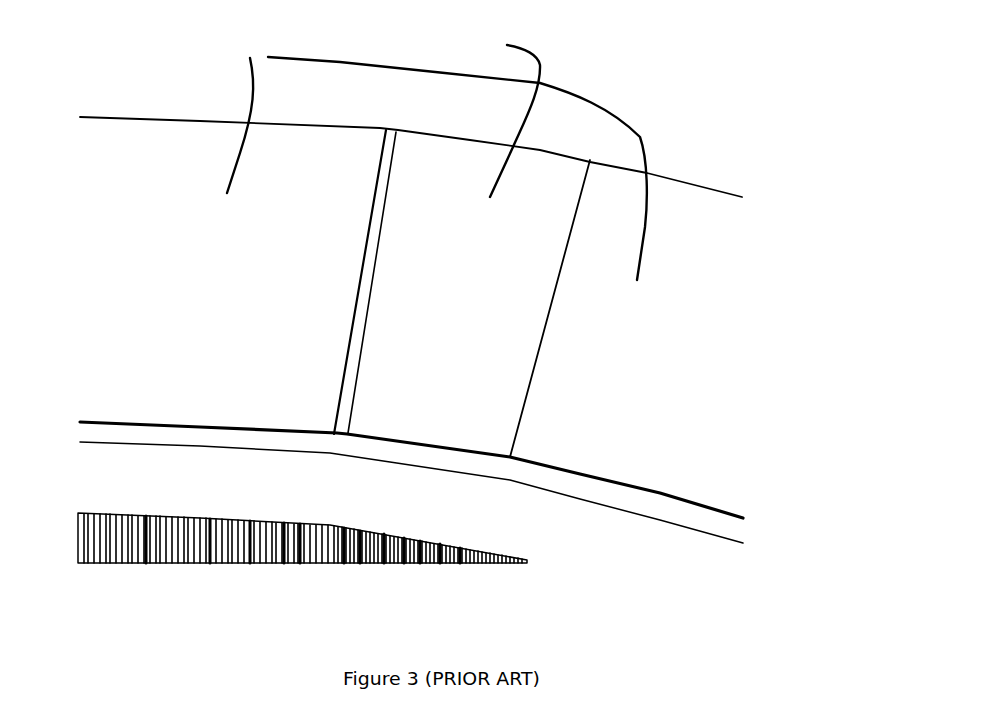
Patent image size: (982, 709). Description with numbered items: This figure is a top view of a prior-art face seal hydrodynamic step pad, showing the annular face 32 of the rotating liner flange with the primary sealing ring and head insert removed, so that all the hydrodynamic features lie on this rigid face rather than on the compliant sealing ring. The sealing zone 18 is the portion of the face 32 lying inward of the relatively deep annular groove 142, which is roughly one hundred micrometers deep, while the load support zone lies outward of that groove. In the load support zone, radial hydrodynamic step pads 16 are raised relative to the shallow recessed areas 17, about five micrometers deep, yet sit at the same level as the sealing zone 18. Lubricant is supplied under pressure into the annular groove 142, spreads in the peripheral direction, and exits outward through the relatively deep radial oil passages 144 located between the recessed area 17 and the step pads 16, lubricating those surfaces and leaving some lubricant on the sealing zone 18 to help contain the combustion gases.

The radial hydrodynamic step pad 16 is at (504, 112).
The recessed area 17 is at (245, 112).
The sealing zone 18 is at (411, 492).
The annular face 32 is at (302, 561).
The annular groove 142 is at (718, 522).
The radial oil passage 144 is at (398, 130).